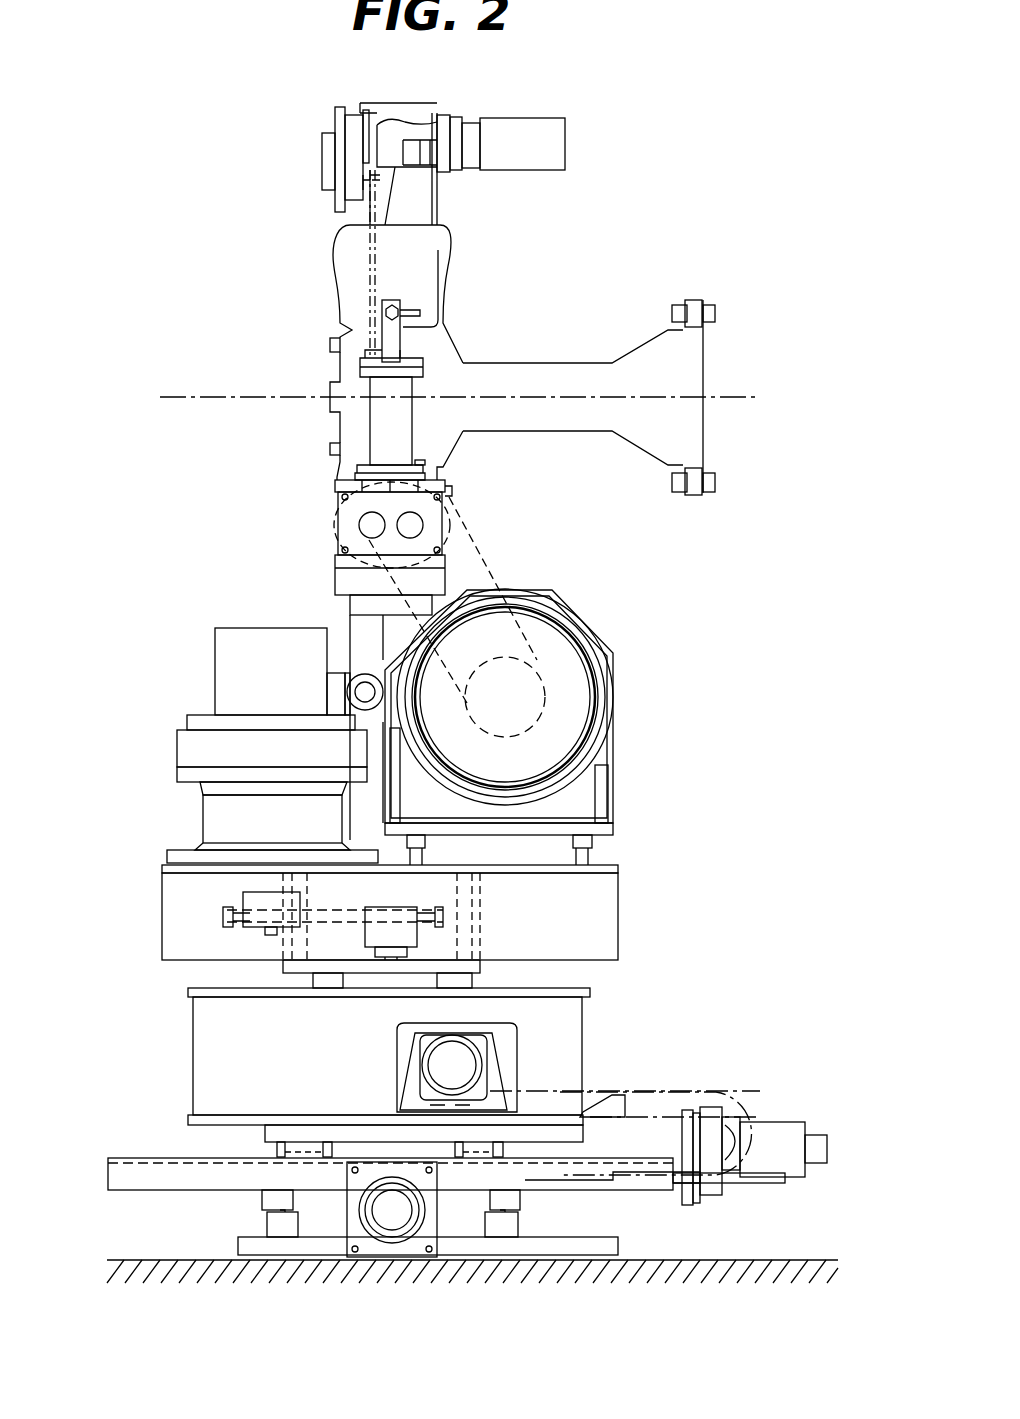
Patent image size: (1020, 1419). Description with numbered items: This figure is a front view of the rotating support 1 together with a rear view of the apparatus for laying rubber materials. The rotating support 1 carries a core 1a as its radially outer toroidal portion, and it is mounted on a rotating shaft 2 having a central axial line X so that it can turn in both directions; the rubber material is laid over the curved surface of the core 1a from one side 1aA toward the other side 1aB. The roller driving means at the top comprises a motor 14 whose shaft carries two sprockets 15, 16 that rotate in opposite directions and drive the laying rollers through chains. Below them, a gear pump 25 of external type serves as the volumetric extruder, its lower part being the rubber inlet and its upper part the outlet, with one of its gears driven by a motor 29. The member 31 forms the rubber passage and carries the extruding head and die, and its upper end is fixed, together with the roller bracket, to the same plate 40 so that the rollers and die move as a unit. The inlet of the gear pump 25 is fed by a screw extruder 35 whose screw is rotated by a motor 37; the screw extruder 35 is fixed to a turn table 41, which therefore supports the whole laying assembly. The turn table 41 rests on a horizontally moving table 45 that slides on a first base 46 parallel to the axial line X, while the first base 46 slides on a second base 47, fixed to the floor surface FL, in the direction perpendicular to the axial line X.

The rotating support 1 is at (345, 297).
The core 1a is at (345, 220).
The one side of the toroidal portion 1aA is at (335, 247).
The other side of the toroidal portion 1aB is at (450, 250).
The rotating shaft 2 is at (545, 363).
The motor 14 is at (538, 118).
The sprocket 15 is at (380, 127).
The sprocket 16 is at (393, 186).
The gear pump 25 is at (433, 525).
The motor 29 is at (575, 610).
The member forming the passage 31 is at (395, 425).
The screw extruder 35 is at (363, 634).
The motor 37 is at (233, 665).
The plate 40 is at (430, 367).
The turn table 41 is at (598, 867).
The horizontally moving table 45 is at (203, 1132).
The first base 46 is at (145, 1178).
The second base 47 is at (275, 1228).
The central axial line X is at (230, 382).
The floor surface FL is at (772, 1260).